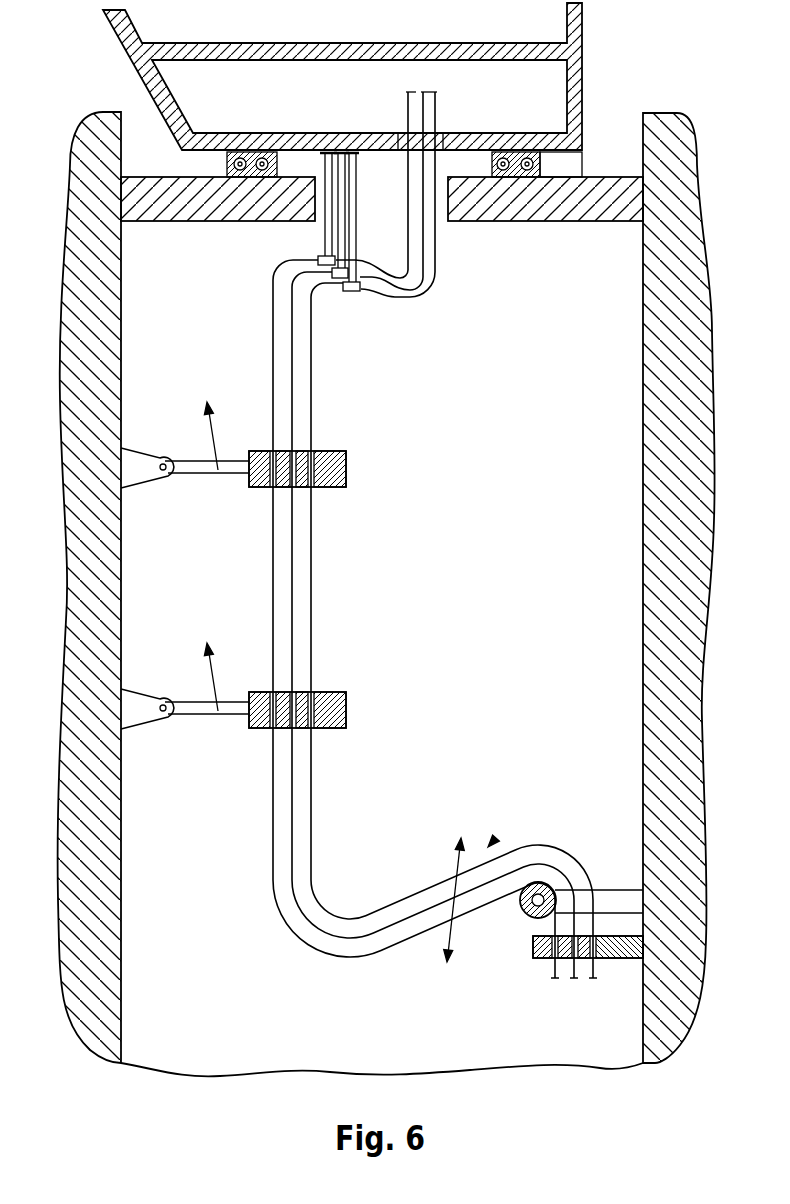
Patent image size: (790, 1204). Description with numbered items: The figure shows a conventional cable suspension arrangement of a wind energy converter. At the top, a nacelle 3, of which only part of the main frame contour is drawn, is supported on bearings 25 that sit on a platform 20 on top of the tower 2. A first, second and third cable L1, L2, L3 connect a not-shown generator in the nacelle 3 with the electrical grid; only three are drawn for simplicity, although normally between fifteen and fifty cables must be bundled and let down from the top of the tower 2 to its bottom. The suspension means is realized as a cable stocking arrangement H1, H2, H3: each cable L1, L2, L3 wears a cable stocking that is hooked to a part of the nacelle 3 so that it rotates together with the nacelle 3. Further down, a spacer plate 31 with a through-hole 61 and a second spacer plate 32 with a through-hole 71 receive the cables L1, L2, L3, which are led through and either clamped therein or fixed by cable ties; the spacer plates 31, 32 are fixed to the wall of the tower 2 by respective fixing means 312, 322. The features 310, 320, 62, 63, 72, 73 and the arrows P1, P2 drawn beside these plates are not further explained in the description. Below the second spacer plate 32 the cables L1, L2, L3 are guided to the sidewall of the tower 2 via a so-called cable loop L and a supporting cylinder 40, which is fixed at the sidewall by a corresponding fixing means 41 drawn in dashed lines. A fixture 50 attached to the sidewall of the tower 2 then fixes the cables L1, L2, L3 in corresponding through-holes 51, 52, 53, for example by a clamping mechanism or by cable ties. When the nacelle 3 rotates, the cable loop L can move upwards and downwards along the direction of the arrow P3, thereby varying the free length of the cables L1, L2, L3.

The tower 2 is at (663, 143).
The nacelle 3 is at (580, 66).
The platform 20 is at (620, 187).
The bearings 25 is at (227, 163).
The first cable L1 is at (408, 118).
The second cable L2 is at (423, 110).
The third cable L3 is at (435, 128).
The cable stocking H1 is at (325, 232).
The cable stocking H2 is at (342, 182).
The cable stocking H3 is at (353, 213).
The spacer plate 31 is at (347, 465).
The first pivot 310 is at (163, 463).
The fixing means 312 is at (192, 474).
The through-hole 61 is at (270, 450).
The second seal segment 62 is at (293, 450).
The third seal segment 63 is at (313, 450).
The first pivot direction P1 is at (217, 443).
The spacer plate 32 is at (347, 706).
The second pivot 320 is at (163, 704).
The fixing means 322 is at (192, 715).
The through-hole 71 is at (270, 691).
The fifth seal segment 72 is at (293, 691).
The sixth seal segment 73 is at (313, 691).
The second pivot direction P2 is at (217, 684).
The cable loop L is at (492, 842).
The arrow P3 is at (446, 868).
The supporting cylinder 40 is at (530, 912).
The fixing means 41 is at (612, 903).
The fixture 50 is at (622, 958).
The through-hole 51 is at (548, 958).
The through-hole 52 is at (568, 960).
The through-hole 53 is at (591, 960).